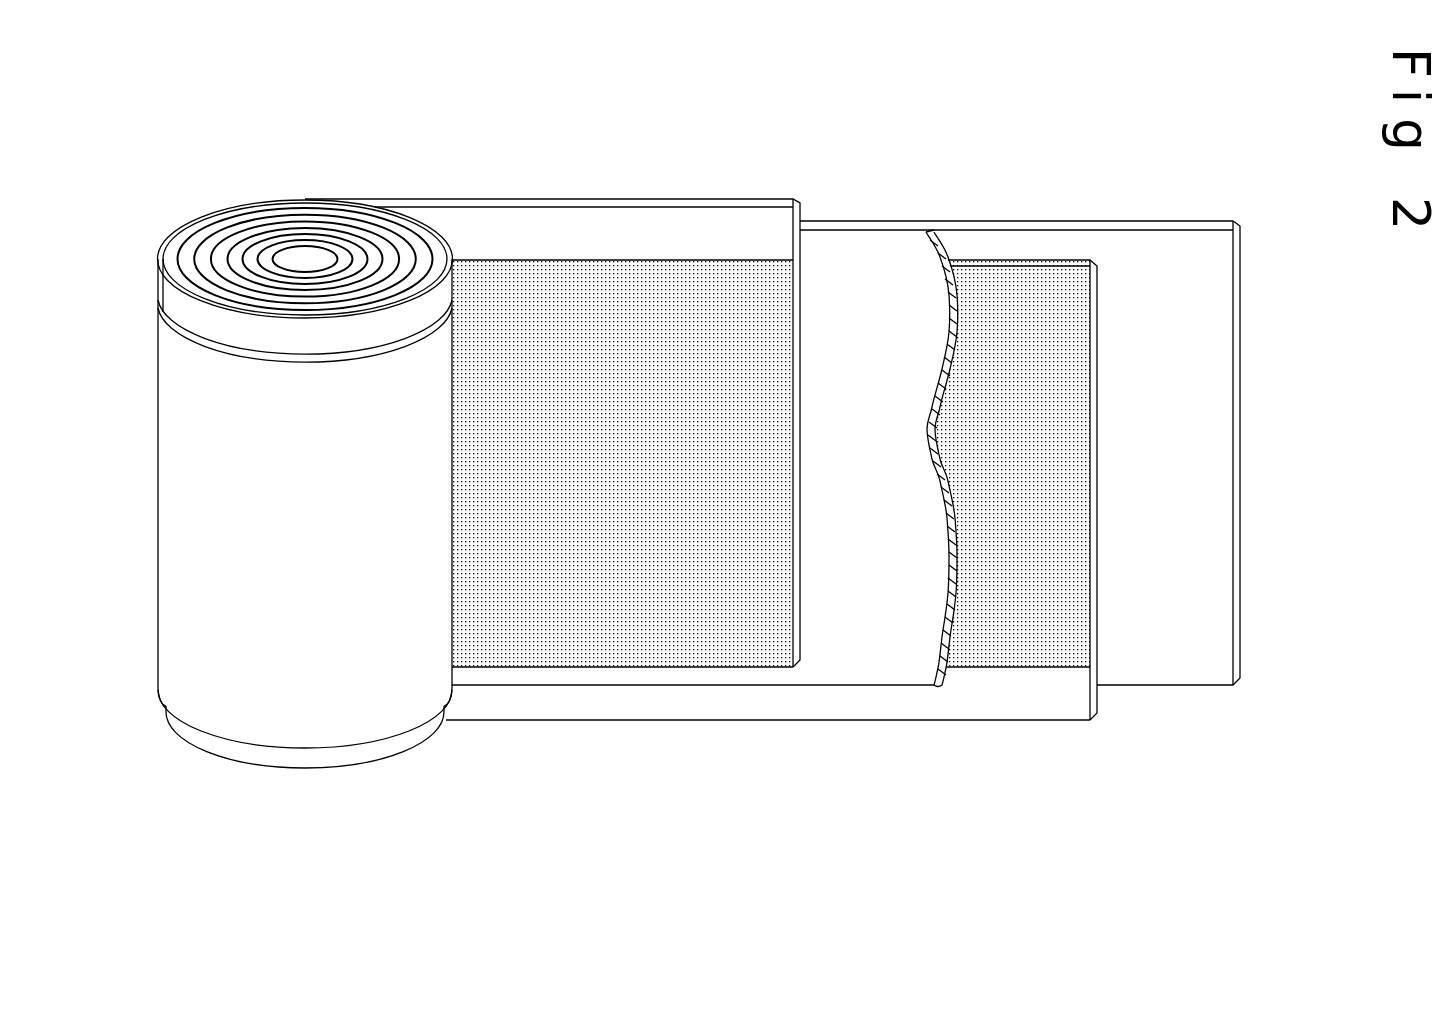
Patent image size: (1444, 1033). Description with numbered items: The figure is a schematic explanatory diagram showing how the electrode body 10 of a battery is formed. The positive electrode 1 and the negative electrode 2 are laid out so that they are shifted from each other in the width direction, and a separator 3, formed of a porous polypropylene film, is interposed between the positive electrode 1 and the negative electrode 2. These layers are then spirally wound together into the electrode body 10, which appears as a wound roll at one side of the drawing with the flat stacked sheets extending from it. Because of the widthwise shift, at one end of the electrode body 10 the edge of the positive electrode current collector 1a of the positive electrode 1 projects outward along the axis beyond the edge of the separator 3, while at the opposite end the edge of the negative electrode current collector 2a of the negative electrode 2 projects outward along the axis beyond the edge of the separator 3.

The electrode body 10 is at (263, 186).
The positive electrode 1 is at (640, 290).
The positive electrode current collector 1a is at (383, 332).
The negative electrode 2 is at (982, 625).
The negative electrode current collector 2a is at (1035, 693).
The separator 3 is at (872, 295).